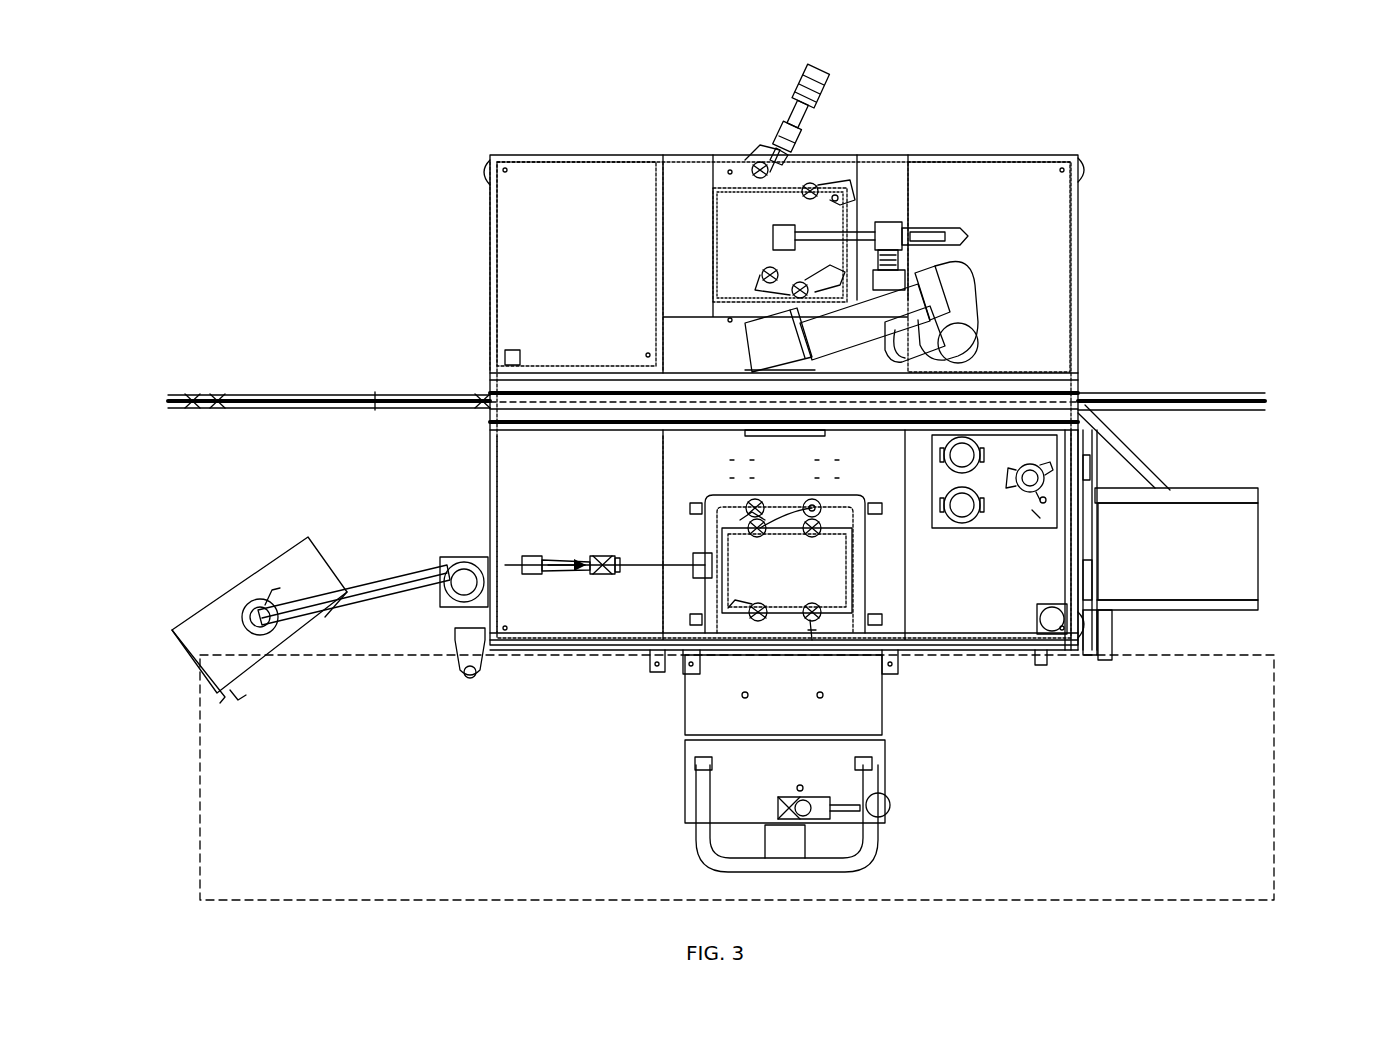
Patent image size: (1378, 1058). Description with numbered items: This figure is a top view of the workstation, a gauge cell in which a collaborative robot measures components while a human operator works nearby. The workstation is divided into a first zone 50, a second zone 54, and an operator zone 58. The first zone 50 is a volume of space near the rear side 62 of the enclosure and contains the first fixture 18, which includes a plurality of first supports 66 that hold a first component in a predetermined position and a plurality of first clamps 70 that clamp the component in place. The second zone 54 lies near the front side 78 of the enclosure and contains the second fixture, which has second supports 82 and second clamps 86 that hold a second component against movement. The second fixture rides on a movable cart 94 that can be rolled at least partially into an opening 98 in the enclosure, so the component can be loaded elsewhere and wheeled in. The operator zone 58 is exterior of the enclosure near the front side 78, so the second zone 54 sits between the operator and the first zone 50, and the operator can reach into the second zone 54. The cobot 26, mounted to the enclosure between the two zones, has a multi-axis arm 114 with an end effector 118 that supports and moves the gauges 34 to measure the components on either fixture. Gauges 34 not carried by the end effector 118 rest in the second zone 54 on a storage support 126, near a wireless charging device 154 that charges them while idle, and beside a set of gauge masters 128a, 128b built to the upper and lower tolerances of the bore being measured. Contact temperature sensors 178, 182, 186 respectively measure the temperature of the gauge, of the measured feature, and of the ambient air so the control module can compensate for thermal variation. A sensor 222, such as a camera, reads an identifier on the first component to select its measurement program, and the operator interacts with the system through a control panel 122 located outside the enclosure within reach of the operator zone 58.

The first fixture 18 is at (910, 157).
The cobot 26 is at (972, 302).
The gauges 34 is at (932, 213).
The first zone 50 is at (488, 245).
The second zone 54 is at (492, 488).
The operator zone 58 is at (200, 865).
The rear side 62 is at (512, 350).
The first supports 66 is at (790, 288).
The first clamps 70 is at (800, 283).
The front side 78 is at (990, 650).
The second supports 82 is at (757, 614).
The second clamps 86 is at (767, 502).
The movable cart 94 is at (886, 831).
The opening 98 is at (665, 642).
The multi-axis arm 114 is at (967, 327).
The end effector 118 is at (905, 263).
The control panel 122 is at (215, 612).
The storage support 126 is at (1046, 500).
The gauge master 128a is at (977, 452).
The gauge master 128b is at (956, 514).
The wireless charging device 154 is at (1107, 560).
The temperature sensor 178 is at (1073, 470).
The temperature sensor 182 is at (808, 190).
The temperature sensor 186 is at (490, 370).
The sensor 222 is at (830, 70).